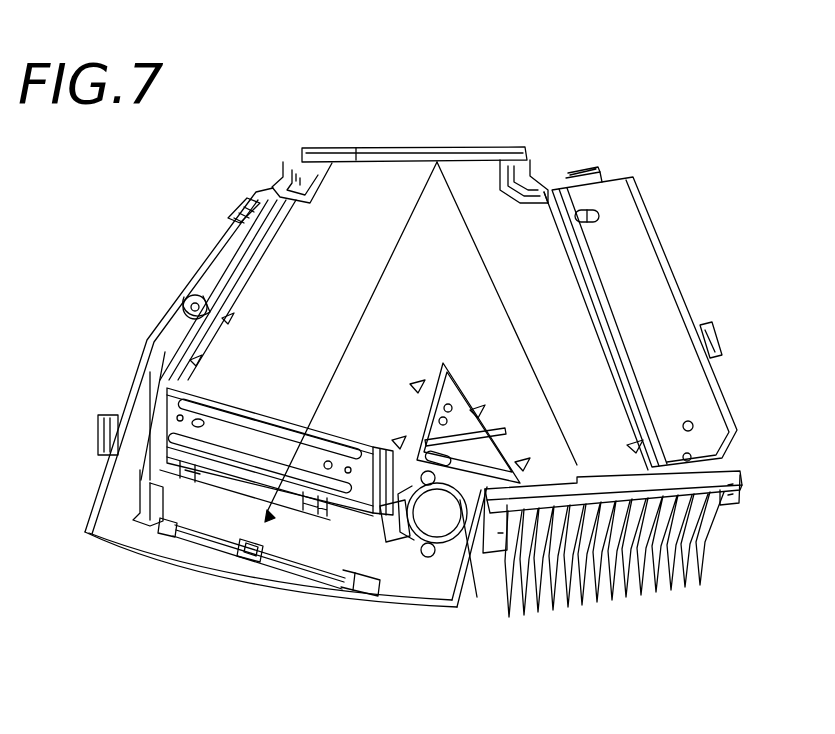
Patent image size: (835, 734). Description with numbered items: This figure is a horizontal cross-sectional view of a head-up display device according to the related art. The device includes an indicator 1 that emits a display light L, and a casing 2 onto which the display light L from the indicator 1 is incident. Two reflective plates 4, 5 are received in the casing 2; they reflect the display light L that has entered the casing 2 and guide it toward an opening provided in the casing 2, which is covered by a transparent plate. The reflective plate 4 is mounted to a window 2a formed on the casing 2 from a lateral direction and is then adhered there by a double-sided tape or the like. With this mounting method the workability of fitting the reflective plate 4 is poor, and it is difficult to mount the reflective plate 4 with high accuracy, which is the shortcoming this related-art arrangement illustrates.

The indicator 1 is at (660, 483).
The casing 2 is at (210, 262).
The window 2a is at (505, 160).
The reflective plate 4 is at (460, 158).
The reflective plate 5 is at (218, 520).
The display light L is at (510, 317).